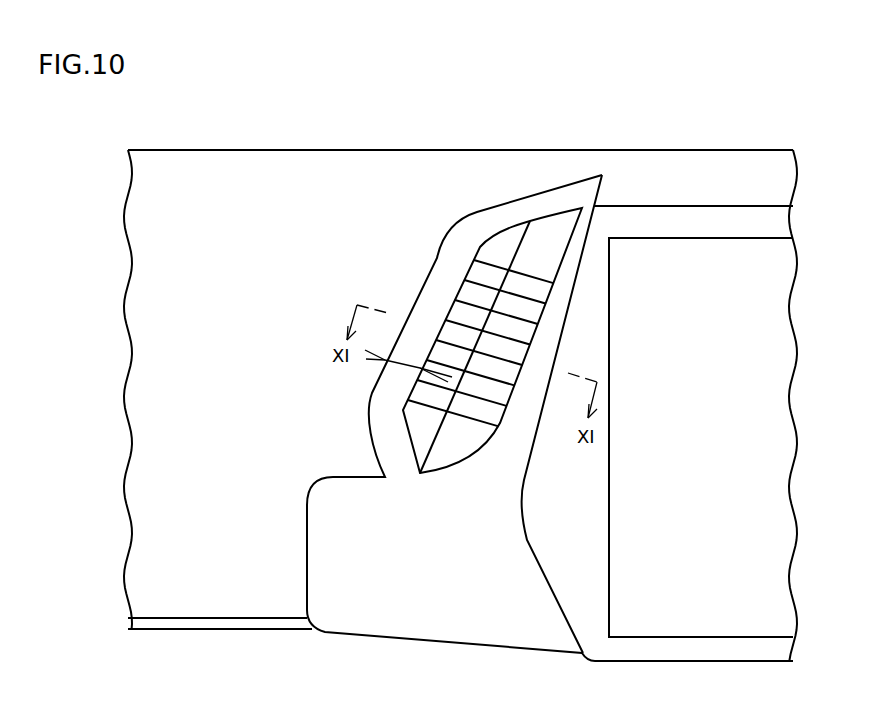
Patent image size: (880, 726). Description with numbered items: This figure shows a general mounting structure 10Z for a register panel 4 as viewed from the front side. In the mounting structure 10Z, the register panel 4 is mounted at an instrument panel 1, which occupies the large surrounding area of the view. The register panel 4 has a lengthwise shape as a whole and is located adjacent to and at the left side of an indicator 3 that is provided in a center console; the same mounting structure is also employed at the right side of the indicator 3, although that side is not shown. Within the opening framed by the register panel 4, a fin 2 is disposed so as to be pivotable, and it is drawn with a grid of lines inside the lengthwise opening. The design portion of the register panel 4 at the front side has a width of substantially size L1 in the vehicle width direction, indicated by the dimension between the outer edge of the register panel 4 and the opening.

The instrument panel 1 is at (279, 183).
The fin 2 is at (473, 320).
The indicator 3 is at (763, 449).
The register panel 4 is at (420, 340).
The mounting structure 10Z is at (447, 295).
The width of design portion L1 is at (402, 365).